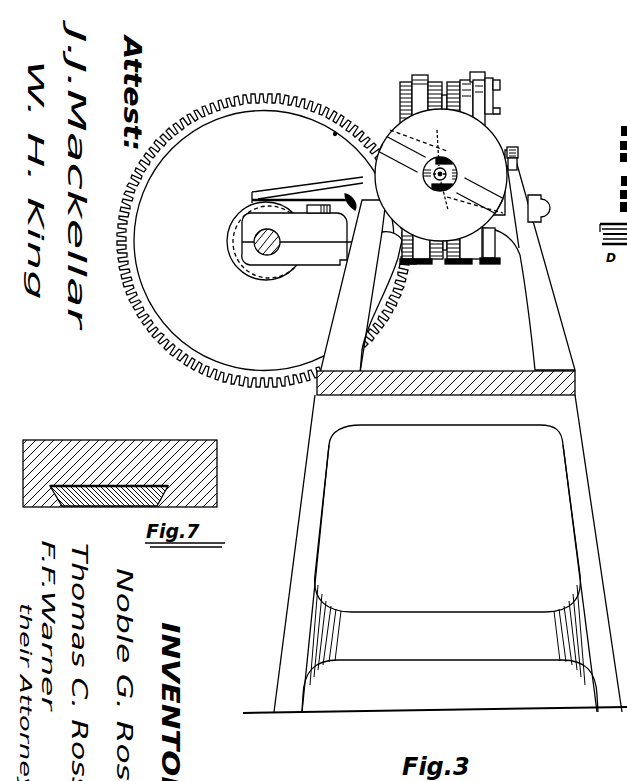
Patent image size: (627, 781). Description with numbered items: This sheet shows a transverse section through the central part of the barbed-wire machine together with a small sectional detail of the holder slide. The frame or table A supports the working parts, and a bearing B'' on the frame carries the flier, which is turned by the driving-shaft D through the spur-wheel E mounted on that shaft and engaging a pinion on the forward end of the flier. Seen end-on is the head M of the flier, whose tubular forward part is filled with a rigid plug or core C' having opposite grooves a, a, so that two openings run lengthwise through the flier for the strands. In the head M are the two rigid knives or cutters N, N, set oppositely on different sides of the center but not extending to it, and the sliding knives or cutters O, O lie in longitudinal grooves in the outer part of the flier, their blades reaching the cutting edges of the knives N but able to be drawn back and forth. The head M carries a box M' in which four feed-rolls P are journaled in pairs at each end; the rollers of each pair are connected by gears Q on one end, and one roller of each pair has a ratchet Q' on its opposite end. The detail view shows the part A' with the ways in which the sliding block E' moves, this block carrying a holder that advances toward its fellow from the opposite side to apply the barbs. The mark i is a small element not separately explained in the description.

In FIG. 3, the frame or table A is at (435, 430).
In FIG. 7, the part carrying ways A' is at (139, 463).
In FIG. 3, the bearing B'' is at (370, 224).
In FIG. 3, the rigid plug or core C' is at (452, 173).
In FIG. 3, the driving-shaft D is at (277, 247).
In FIG. 3, the spur-wheel E is at (264, 240).
In FIG. 7, the sliding block E' is at (112, 505).
In FIG. 3, the head of the flier M is at (462, 257).
In FIG. 3, the box M' is at (436, 91).
In FIG. 3, the rigid knife or cutter N is at (441, 172).
In FIG. 3, the sliding knife or cutter O is at (441, 175).
In FIG. 3, the feed-roll P is at (460, 80).
In FIG. 3, the gear Q is at (405, 189).
In FIG. 3, the ratchet Q' is at (497, 182).
In FIG. 3, the groove a is at (433, 175).
In FIG. 3, the pins i is at (437, 170).